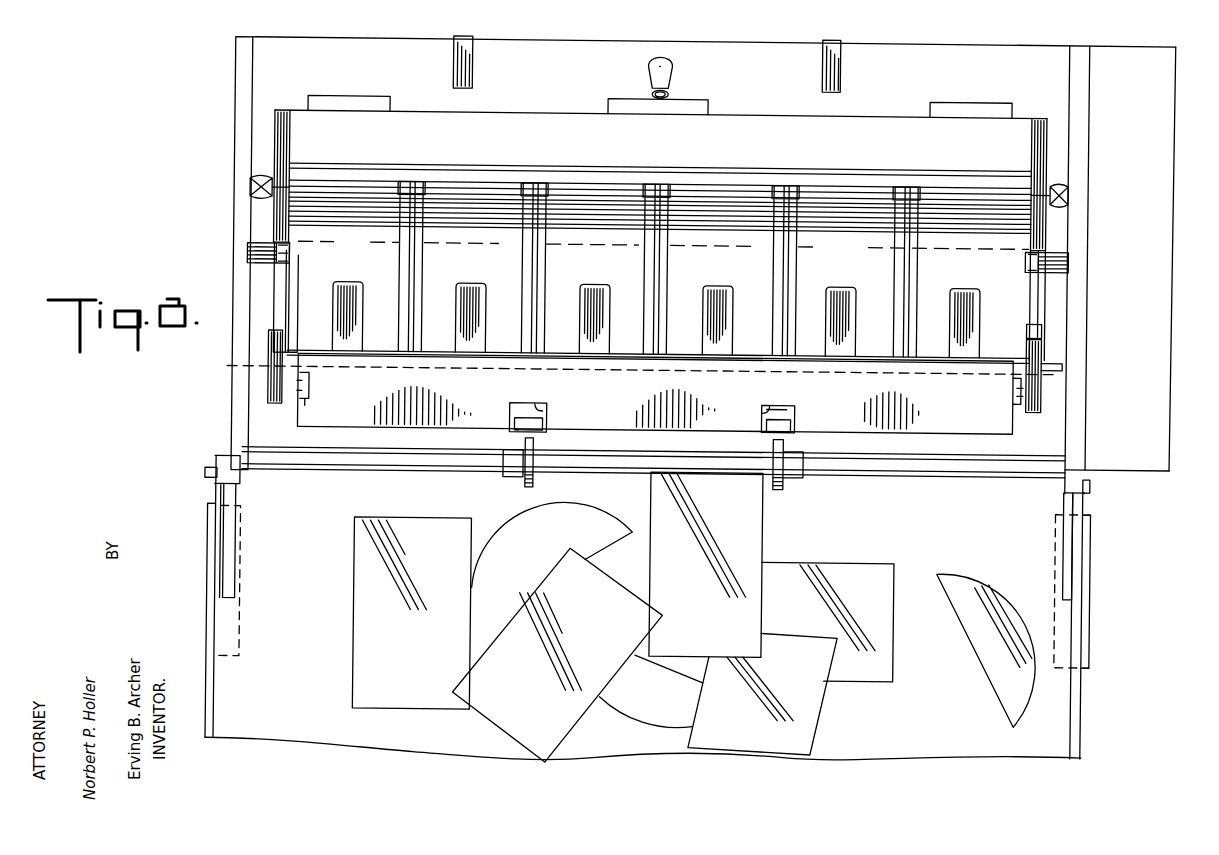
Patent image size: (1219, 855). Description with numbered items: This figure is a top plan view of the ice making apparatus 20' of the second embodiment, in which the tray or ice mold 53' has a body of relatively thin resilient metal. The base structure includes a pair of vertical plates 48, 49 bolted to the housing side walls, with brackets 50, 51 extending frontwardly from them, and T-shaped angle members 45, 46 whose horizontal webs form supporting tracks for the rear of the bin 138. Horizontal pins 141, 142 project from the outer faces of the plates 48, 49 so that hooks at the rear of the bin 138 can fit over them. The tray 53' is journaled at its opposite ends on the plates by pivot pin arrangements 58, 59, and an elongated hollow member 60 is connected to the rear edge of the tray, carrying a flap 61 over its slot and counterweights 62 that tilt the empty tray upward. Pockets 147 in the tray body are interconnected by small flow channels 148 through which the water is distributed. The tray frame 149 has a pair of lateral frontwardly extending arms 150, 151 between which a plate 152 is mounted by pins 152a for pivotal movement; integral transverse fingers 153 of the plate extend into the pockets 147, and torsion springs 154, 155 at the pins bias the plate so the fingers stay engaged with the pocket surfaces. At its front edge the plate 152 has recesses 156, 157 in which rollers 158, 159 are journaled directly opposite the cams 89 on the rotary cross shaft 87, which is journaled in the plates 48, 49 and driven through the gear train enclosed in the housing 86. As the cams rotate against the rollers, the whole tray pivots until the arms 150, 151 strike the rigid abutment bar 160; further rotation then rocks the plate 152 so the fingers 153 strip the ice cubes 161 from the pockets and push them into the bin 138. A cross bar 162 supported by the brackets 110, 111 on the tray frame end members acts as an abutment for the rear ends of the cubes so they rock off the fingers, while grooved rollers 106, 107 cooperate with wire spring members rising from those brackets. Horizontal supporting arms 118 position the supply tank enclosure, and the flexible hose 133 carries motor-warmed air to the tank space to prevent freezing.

The ice making apparatus 20' is at (185, 182).
The T-shaped angle member 45 is at (1095, 581).
The T-shaped angle member 46 is at (212, 527).
The vertical plate 48 is at (1090, 118).
The vertical plate 49 is at (235, 113).
The bracket 50 is at (1068, 532).
The bracket 51 is at (234, 538).
The tray 53' is at (237, 280).
The pivot pin arrangement 58 is at (1063, 182).
The pivot pin arrangement 59 is at (250, 182).
The elongated hollow member 60 is at (557, 118).
The flap 61 is at (673, 175).
The counterweight 62 is at (362, 95).
The transmission housing 86 is at (1160, 322).
The rotary cross shaft 87 is at (904, 469).
The cam 89 is at (537, 482).
The grooved roller 106 is at (1062, 260).
The grooved roller 107 is at (249, 257).
The bracket 110 is at (1037, 224).
The bracket 111 is at (276, 281).
The horizontal supporting arm 118 is at (472, 60).
The flexible hose 133 is at (674, 61).
The bin 138 is at (214, 700).
The horizontal pin 141 is at (1095, 478).
The horizontal pin 142 is at (210, 470).
The pocket 147 is at (366, 252).
The flow channel 148 is at (436, 238).
The tray frame 149 is at (1044, 321).
The arm 150 is at (1044, 399).
The arm 151 is at (271, 398).
The plate 152 is at (858, 426).
The pin 152a is at (300, 371).
The finger 153 is at (364, 316).
The torsion spring 154 is at (1022, 398).
The torsion spring 155 is at (300, 400).
The recess 156 is at (765, 404).
The recess 157 is at (550, 406).
The roller 158 is at (798, 409).
The roller 159 is at (515, 430).
The abutment bar 160 is at (1066, 358).
The ice cube 161 is at (441, 690).
The cross bar 162 is at (783, 180).